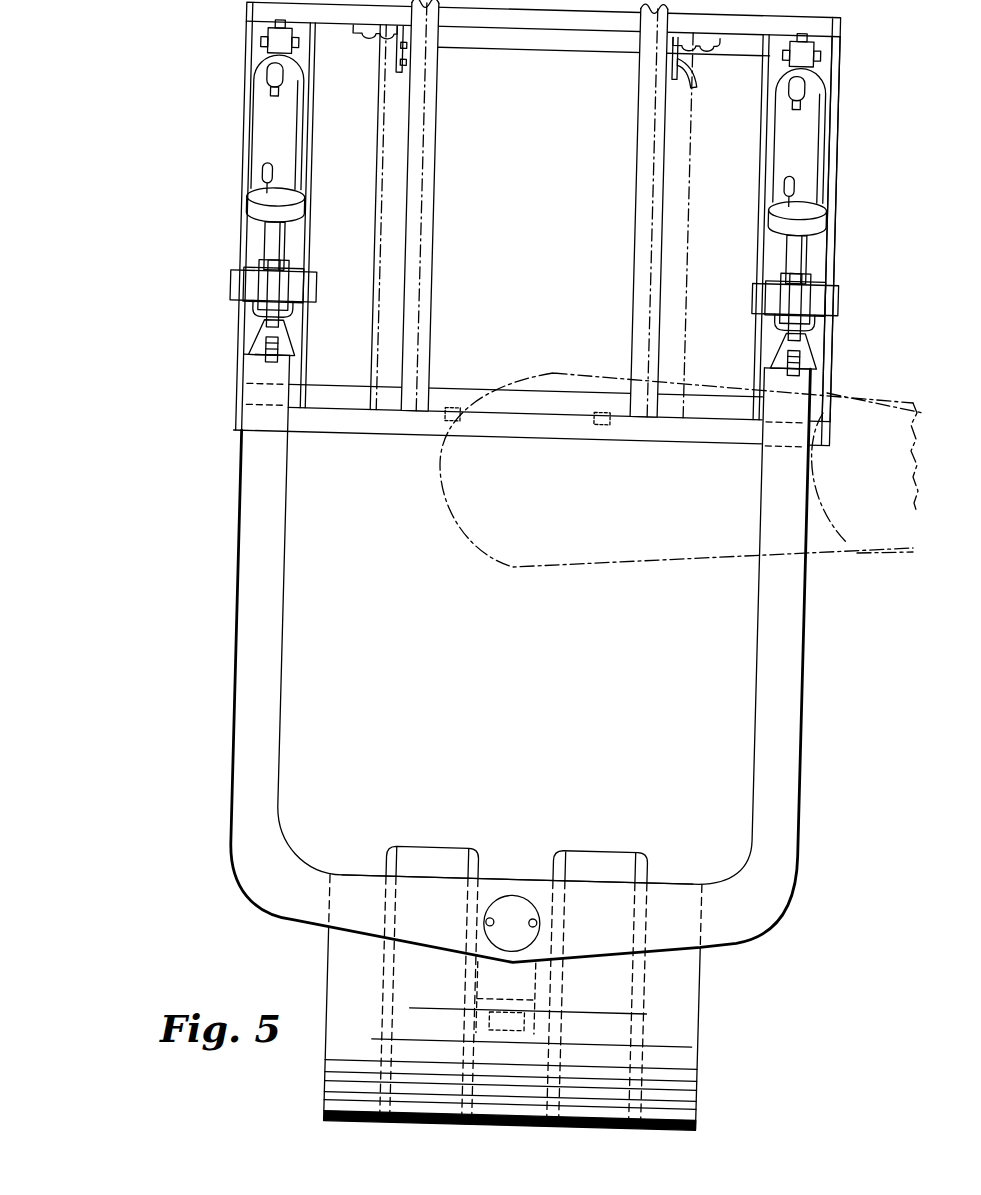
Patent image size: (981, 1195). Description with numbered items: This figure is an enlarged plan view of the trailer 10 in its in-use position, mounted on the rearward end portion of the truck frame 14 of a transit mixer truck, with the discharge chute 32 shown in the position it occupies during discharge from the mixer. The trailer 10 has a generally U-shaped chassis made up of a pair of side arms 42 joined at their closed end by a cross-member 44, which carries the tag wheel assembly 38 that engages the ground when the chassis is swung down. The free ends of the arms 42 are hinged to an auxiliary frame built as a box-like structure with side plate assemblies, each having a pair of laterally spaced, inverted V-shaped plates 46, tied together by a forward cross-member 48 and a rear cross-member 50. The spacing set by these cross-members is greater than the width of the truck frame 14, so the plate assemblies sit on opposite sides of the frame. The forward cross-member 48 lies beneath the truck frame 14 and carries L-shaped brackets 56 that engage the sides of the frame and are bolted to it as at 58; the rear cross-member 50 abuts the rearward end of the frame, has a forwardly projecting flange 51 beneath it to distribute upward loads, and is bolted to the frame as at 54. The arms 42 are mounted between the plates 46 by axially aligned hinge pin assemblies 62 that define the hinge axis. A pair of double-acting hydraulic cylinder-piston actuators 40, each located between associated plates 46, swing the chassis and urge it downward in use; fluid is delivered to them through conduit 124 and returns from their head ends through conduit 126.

The trailer 10 is at (817, 812).
The truck frame 14 is at (436, 214).
The discharge chute 32 is at (838, 558).
The tag wheel assembly 38 is at (588, 853).
The hydraulic cylinder-piston actuator 40 is at (269, 134).
The side arm 42 is at (281, 681).
The cross-member 44 is at (353, 874).
The side plate 46 is at (755, 252).
The forward cross-member 48 is at (551, 29).
The rear cross-member 50 is at (342, 430).
The forwardly projecting flange 51 is at (303, 387).
The bolting 54 is at (450, 440).
The L-shaped bracket 56 is at (368, 31).
The bolting 58 is at (393, 64).
The hinge pin assembly 62 is at (314, 292).
The conduit 124 is at (290, 183).
The conduit 126 is at (284, 91).